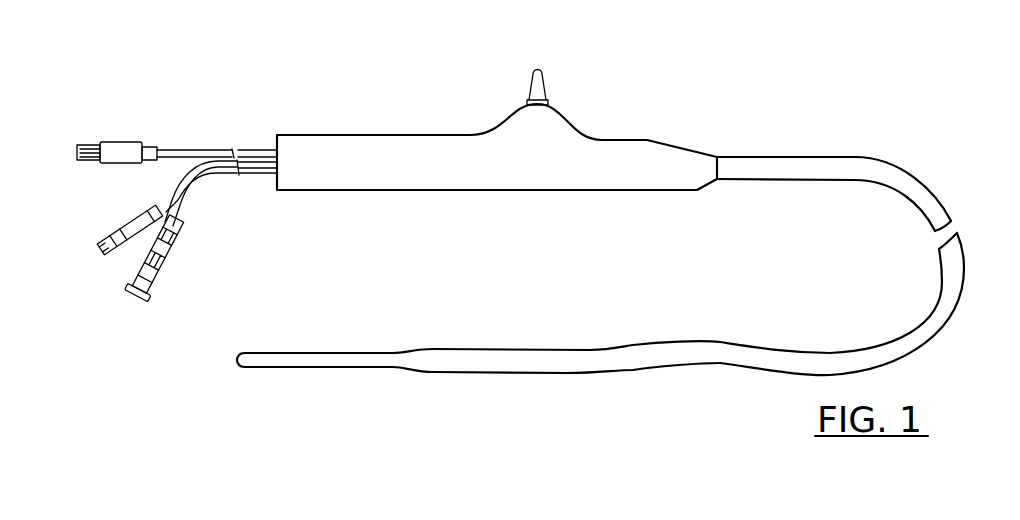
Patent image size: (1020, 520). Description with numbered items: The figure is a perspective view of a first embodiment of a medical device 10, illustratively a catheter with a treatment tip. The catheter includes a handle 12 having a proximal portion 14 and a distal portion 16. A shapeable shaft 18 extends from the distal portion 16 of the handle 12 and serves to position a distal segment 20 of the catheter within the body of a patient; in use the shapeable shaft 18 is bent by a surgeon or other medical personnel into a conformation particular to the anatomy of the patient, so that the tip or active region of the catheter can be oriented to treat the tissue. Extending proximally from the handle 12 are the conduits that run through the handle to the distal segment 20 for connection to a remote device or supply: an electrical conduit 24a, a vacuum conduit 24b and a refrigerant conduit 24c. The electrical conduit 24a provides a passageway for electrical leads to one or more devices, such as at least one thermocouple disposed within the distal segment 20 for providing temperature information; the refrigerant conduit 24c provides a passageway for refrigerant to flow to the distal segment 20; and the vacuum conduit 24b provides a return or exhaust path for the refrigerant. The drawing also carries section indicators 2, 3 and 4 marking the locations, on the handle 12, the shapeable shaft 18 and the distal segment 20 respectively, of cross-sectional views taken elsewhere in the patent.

The medical device 10 is at (645, 42).
The handle 12 is at (445, 122).
The proximal portion 14 is at (403, 178).
The distal portion 16 is at (682, 183).
The shapeable shaft 18 is at (913, 187).
The distal segment 20 is at (360, 364).
The electrical conduit 24a is at (183, 148).
The vacuum conduit 24b is at (124, 234).
The refrigerant conduit 24c is at (166, 272).
The section line 2- 2 is at (307, 135).
The section line 3- 3 is at (811, 135).
The section line 4- 4 is at (272, 345).